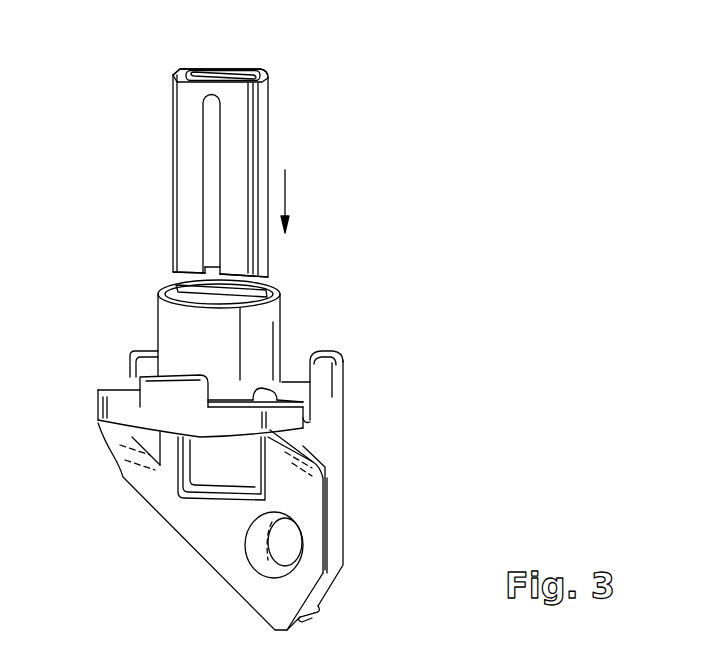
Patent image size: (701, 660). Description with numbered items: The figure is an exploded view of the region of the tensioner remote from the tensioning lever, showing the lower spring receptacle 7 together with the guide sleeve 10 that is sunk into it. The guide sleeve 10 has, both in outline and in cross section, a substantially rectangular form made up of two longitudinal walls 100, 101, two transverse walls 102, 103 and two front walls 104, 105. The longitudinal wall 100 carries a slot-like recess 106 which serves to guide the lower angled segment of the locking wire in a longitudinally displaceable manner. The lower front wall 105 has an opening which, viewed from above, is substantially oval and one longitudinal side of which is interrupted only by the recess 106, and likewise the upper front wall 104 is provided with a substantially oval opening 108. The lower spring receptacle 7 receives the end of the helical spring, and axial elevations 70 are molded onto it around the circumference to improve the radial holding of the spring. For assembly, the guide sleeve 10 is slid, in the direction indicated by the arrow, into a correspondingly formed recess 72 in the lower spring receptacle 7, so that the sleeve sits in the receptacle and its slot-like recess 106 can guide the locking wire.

The guide sleeve 10 is at (167, 88).
The longitudinal wall 100 is at (188, 193).
The longitudinal wall 101 is at (268, 117).
The transverse wall 102 is at (173, 153).
The transverse wall 103 is at (258, 143).
The upper front wall 104 is at (268, 66).
The lower front wall 105 is at (173, 272).
The slot-like recess 106 is at (212, 228).
The oval opening 108 is at (222, 72).
The lower spring receptacle 7 is at (337, 509).
The axial elevations 70 is at (133, 360).
The recess 72 is at (232, 473).